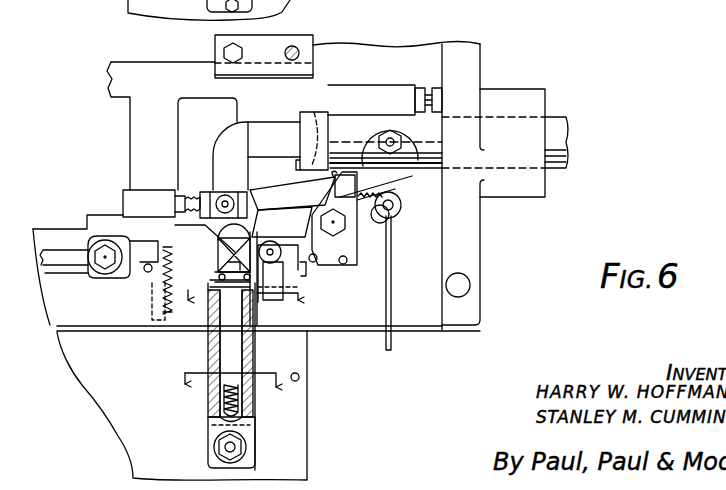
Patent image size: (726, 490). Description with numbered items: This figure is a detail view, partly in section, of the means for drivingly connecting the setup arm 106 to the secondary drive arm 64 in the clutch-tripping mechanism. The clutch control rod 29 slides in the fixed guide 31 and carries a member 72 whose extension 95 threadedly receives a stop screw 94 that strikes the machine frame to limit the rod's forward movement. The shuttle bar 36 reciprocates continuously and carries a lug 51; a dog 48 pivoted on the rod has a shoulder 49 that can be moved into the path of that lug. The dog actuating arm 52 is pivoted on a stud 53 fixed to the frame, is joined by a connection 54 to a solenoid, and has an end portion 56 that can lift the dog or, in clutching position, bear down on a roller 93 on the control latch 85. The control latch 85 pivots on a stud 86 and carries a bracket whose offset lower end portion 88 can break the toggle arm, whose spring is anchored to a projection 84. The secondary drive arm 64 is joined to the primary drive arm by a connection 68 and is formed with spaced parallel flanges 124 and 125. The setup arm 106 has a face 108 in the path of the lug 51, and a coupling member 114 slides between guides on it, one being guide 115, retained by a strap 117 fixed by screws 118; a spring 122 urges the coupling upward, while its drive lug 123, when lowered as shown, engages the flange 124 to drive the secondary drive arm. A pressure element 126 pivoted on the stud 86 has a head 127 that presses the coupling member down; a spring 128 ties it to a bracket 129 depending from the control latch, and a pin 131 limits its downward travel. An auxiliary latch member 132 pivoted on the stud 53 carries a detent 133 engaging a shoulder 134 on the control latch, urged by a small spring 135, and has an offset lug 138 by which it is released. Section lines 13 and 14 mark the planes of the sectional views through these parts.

The section line 13 is at (254, 307).
The section line 14 is at (230, 376).
The clutch control rod 29 is at (552, 127).
The fixed guide 31 is at (520, 97).
The shuttle bar 36 is at (136, 74).
The dog 48 is at (385, 188).
The shoulder 49 is at (320, 133).
The lug 51 is at (277, 132).
The dog actuating arm 52 is at (402, 209).
The stud 53 is at (337, 228).
The connection 54 is at (393, 342).
The end portion 56 is at (278, 231).
The secondary drive arm 64 is at (212, 427).
The connection 68 is at (128, 197).
The member 72 is at (327, 133).
The projection 84 is at (228, 447).
The control latch 85 is at (112, 276).
The stud 86 is at (103, 254).
The lower end portion 88 is at (274, 302).
The roller 93 is at (274, 245).
The stop screw 94 is at (437, 90).
The extension 95 is at (403, 86).
The setup arm 106 is at (215, 160).
The face 108 is at (250, 142).
The coupling member 114 is at (227, 352).
The guide 115 is at (217, 257).
The strap 117 is at (240, 268).
The screws 118 is at (219, 277).
The spring 122 is at (224, 398).
The drive lug 123 is at (236, 304).
The flange 124 is at (210, 360).
The flange 125 is at (253, 360).
The pressure element 126 is at (160, 232).
The head 127 is at (215, 205).
The spring 128 is at (160, 298).
The bracket 129 is at (157, 328).
The pin 131 is at (148, 264).
The auxiliary latch member 132 is at (345, 248).
The detent 133 is at (320, 262).
The shoulder 134 is at (303, 277).
The spring 135 is at (390, 222).
The offset lug 138 is at (333, 178).